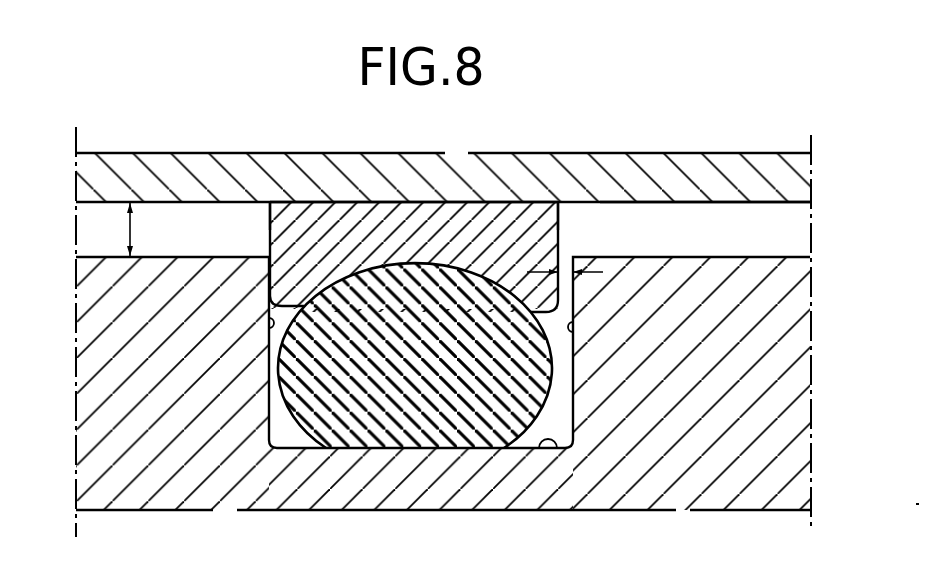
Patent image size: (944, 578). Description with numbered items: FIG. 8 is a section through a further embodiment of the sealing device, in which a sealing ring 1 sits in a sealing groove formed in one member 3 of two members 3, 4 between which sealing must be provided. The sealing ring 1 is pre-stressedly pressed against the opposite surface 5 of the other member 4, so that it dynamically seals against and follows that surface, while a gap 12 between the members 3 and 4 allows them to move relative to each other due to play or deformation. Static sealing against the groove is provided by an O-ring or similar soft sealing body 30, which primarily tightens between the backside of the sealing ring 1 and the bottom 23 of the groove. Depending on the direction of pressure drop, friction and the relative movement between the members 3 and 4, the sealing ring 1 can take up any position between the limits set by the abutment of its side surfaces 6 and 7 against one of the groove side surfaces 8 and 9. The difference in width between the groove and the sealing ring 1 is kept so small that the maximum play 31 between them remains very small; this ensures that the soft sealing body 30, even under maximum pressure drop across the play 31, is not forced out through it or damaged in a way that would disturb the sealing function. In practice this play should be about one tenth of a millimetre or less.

The sealing ring 1 is at (313, 236).
The member 3 is at (702, 477).
The member 4 is at (625, 172).
The opposite surface 5 is at (672, 208).
The side surface of the sealing ring 6 is at (562, 230).
The side surface of the sealing ring 7 is at (266, 231).
The side surface of the sealing groove 8 is at (577, 333).
The side surface of the sealing groove 9 is at (272, 330).
The gap 12 is at (130, 237).
The bottom of the groove 23 is at (557, 455).
The soft sealing body 30 is at (368, 412).
The play 31 is at (562, 258).